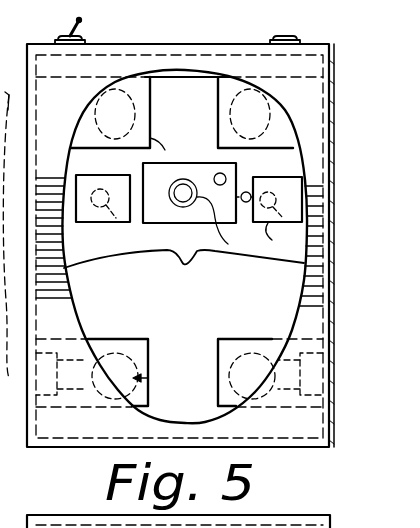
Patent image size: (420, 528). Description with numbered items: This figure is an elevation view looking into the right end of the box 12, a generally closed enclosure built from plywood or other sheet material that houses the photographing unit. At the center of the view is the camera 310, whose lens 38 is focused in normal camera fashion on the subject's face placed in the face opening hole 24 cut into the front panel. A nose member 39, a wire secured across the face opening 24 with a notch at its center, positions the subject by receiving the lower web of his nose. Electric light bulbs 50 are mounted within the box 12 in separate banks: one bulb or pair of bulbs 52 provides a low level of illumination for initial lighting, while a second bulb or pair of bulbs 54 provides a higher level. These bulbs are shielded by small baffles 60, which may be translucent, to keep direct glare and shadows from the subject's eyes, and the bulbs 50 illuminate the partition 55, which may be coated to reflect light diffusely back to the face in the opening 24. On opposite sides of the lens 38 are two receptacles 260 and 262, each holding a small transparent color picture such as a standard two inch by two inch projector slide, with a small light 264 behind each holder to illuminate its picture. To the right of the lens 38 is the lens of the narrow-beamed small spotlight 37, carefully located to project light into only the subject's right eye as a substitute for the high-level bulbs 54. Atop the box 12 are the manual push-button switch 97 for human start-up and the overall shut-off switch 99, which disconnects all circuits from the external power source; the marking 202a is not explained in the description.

The box 12 is at (80, 450).
The face opening hole 24 is at (77, 268).
The spotlight 37 is at (285, 239).
The lens arrangement 38 is at (233, 224).
The nose member 39 is at (206, 262).
The electric light bulbs 50 is at (236, 108).
The bulb or pair of bulbs 52 is at (232, 125).
The bulb or pair of bulbs 54 is at (148, 378).
The partition 55 is at (205, 339).
The baffles 60 is at (215, 148).
The manual push-button switch 97 is at (277, 35).
The overall shut-off switch 99 is at (82, 20).
The receptacle 260 is at (139, 219).
The receptacle 262 is at (292, 177).
The small light 264 is at (117, 222).
The camera 310 is at (141, 170).
The adjacent housing 202a is at (178, 508).